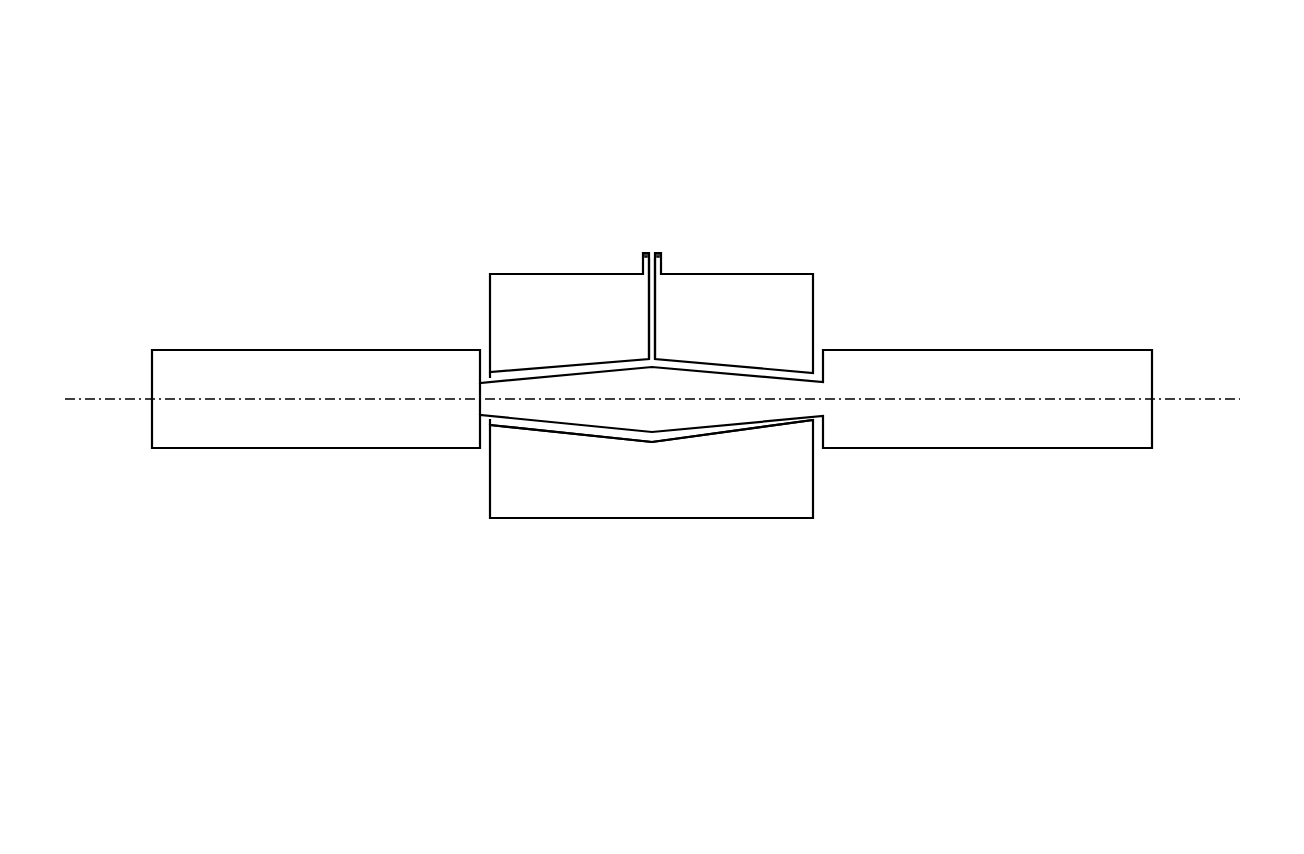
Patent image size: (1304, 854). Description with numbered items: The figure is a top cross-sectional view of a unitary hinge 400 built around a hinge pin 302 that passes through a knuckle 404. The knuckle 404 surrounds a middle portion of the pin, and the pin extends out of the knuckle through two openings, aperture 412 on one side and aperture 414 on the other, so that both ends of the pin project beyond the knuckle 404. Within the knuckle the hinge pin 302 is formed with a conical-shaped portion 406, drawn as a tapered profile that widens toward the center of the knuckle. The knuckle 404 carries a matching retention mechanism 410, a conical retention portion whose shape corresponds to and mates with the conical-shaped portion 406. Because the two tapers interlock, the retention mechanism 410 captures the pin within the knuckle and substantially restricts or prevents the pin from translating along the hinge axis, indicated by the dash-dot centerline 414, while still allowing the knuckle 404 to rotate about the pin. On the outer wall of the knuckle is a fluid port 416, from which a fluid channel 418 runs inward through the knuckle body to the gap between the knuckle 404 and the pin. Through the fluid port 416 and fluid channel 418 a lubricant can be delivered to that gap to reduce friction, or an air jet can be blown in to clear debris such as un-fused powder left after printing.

The unitary hinge 400 is at (209, 118).
The hinge pin 302 is at (652, 436).
The knuckle 404 is at (502, 264).
The conical-shaped portion 406 is at (551, 388).
The retention mechanism 410 is at (710, 445).
The aperture 412 is at (482, 357).
The aperture 414 is at (1171, 410).
The fluid port 416 is at (652, 231).
The fluid channel 418 is at (663, 333).